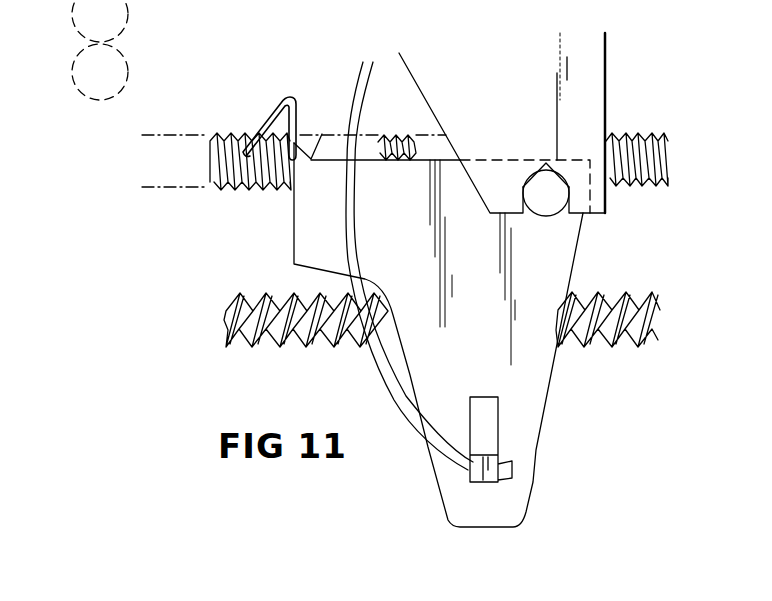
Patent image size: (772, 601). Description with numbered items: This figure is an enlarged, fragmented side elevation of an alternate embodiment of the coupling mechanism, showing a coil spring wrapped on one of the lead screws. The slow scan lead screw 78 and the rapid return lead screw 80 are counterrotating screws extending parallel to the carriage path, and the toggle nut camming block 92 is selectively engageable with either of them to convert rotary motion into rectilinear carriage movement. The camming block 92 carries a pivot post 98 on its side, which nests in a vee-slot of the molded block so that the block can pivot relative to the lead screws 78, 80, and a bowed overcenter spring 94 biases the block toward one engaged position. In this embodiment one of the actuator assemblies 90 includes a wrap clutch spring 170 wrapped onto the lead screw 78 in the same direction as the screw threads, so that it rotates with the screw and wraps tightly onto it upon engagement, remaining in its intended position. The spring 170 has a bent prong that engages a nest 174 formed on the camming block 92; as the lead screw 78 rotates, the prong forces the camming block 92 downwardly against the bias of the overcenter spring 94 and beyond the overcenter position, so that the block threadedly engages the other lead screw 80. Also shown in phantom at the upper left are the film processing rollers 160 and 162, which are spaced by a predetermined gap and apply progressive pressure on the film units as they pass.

The film processing roller 160 is at (127, 27).
The film processing roller 162 is at (127, 77).
The slow scan lead screw 78 is at (213, 134).
The wrap clutch spring 170 is at (277, 113).
The nest 174 is at (313, 157).
The toggle nut camming block 92 is at (528, 456).
The actuator assembly 90 is at (617, 235).
The pivot post 98 is at (540, 210).
The bowed overcenter spring 94 is at (396, 404).
The rapid return lead screw 80 is at (617, 344).